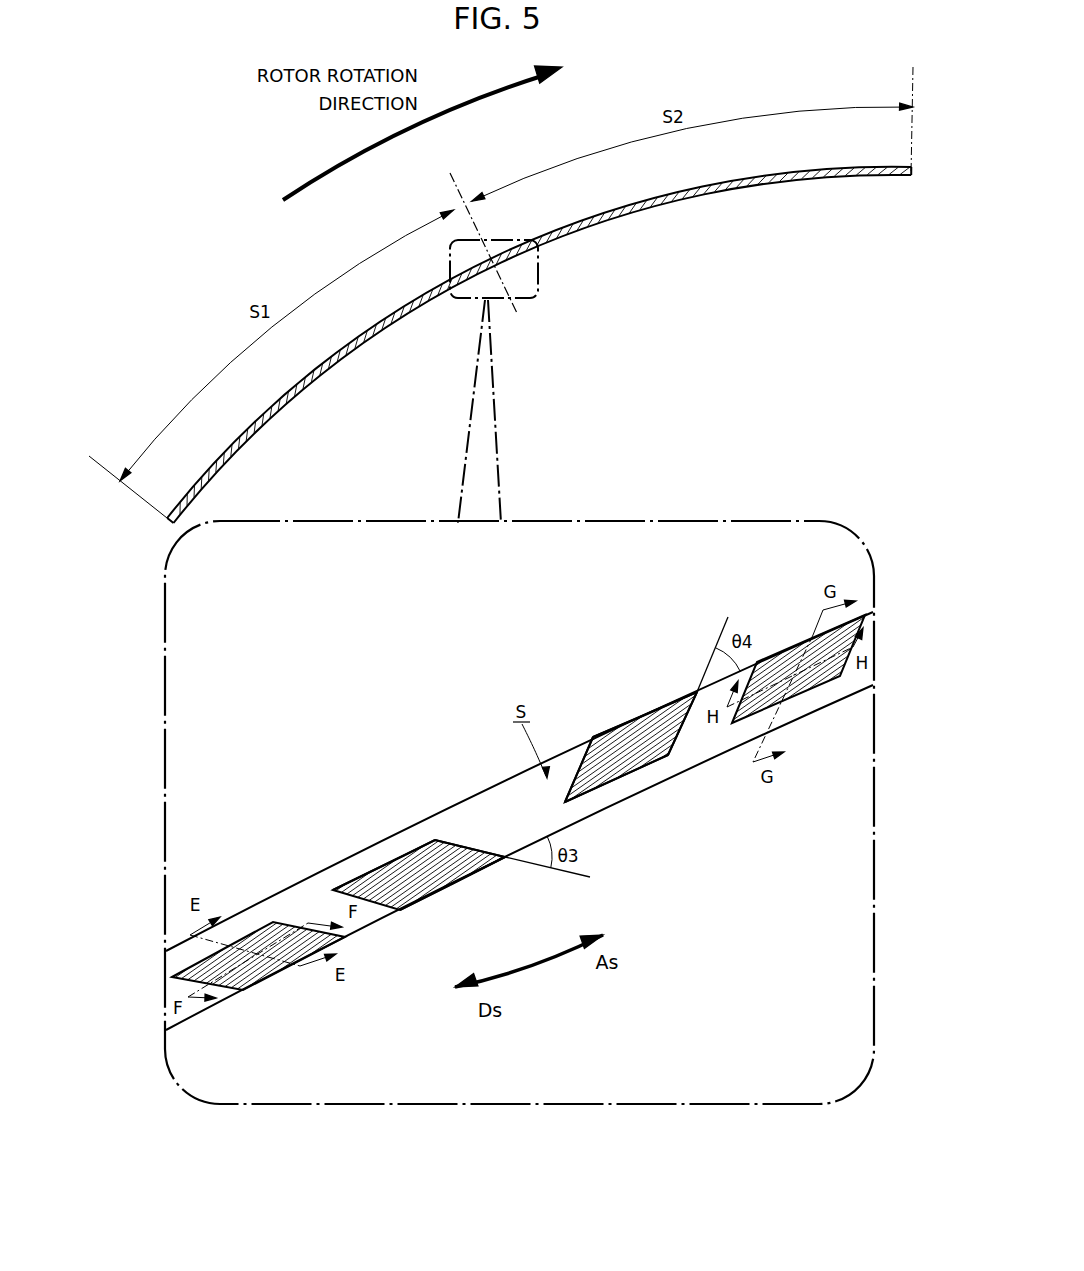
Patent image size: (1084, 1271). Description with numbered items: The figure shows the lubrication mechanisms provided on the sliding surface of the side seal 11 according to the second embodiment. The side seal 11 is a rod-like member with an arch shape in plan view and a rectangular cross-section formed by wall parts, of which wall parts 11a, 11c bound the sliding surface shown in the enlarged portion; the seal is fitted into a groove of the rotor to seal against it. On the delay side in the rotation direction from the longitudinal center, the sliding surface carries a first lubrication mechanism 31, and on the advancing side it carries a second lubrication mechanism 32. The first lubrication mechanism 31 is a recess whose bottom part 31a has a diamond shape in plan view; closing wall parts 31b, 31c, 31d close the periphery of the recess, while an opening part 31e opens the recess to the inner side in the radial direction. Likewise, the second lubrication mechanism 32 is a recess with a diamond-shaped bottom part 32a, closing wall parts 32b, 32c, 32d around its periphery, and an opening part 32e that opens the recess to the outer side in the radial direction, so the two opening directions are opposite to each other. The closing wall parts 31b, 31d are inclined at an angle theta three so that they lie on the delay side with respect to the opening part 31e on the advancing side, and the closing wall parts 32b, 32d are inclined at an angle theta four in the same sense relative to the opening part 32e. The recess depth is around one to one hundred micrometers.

The side seal 11 is at (650, 215).
The wall part 11a is at (495, 792).
The wall part 11c is at (826, 707).
The first lubrication mechanism 31 is at (370, 862).
The bottom part 31a is at (446, 848).
The closing wall part 31b is at (482, 868).
The closing wall part 31c is at (408, 857).
The closing wall part 31d is at (396, 910).
The opening part 31e is at (447, 888).
The second lubrication mechanism 32 is at (748, 726).
The bottom part 32a is at (605, 735).
The closing wall part 32b is at (588, 746).
The closing wall part 32c is at (612, 783).
The closing wall part 32d is at (690, 700).
The opening part 32e is at (641, 713).